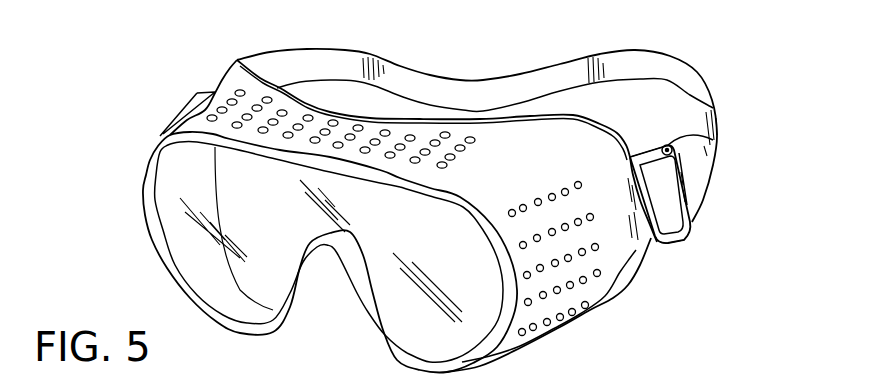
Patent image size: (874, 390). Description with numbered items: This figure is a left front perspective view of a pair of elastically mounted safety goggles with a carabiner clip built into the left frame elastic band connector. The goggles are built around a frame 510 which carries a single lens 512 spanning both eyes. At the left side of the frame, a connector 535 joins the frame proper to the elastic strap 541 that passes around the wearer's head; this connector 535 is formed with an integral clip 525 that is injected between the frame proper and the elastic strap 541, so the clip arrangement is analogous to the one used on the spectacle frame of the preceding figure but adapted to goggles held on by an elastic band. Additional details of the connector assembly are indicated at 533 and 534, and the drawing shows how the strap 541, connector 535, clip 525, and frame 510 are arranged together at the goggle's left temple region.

The frame 510 is at (142, 235).
The single lens 512 is at (427, 238).
The integral clip 525 is at (697, 213).
The buckle 533 is at (648, 153).
The strap end 534 is at (681, 167).
The connector 535 is at (651, 238).
The elastic strap 541 is at (673, 67).